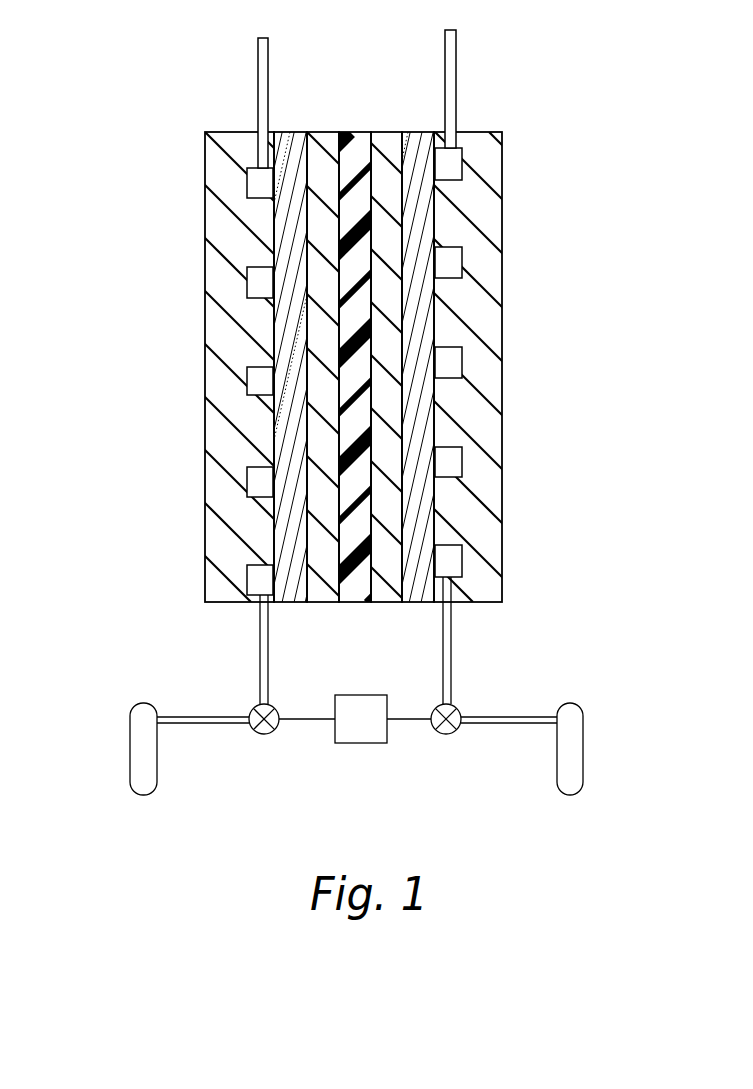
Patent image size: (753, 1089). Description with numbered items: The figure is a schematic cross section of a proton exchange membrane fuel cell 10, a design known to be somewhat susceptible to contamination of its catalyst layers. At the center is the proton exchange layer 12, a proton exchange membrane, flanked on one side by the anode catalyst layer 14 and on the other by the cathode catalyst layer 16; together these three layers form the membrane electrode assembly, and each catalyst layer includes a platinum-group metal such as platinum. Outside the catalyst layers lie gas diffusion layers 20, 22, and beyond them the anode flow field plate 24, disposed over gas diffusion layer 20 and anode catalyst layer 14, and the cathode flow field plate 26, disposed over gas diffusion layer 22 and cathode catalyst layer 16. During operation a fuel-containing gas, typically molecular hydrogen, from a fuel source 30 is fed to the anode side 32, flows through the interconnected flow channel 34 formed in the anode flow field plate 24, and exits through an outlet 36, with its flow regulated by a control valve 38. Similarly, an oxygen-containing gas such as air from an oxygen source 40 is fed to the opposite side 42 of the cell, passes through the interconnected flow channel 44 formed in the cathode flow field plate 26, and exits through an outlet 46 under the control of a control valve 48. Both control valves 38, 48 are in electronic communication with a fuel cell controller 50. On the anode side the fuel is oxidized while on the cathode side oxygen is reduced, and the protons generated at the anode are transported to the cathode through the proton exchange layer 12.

The fuel cell 10 is at (376, 352).
The proton exchange layer 12 is at (358, 138).
The anode catalyst layer 14 is at (325, 138).
The cathode catalyst layer 16 is at (388, 138).
The gas diffusion layer 20 is at (297, 138).
The gas diffusion layer 22 is at (418, 138).
The anode flow field plate 24 is at (214, 318).
The cathode flow field plate 26 is at (500, 307).
The fuel source 30 is at (137, 735).
The anode side 32 is at (376, 352).
The flow channel 34 is at (258, 282).
The outlet 36 is at (262, 59).
The control valve 38 is at (253, 729).
The oxygen source 40 is at (576, 725).
The cathode side 42 is at (376, 352).
The flow channel 44 is at (448, 165).
The outlet 46 is at (449, 52).
The control valve 48 is at (455, 729).
The fuel cell controller 50 is at (361, 719).